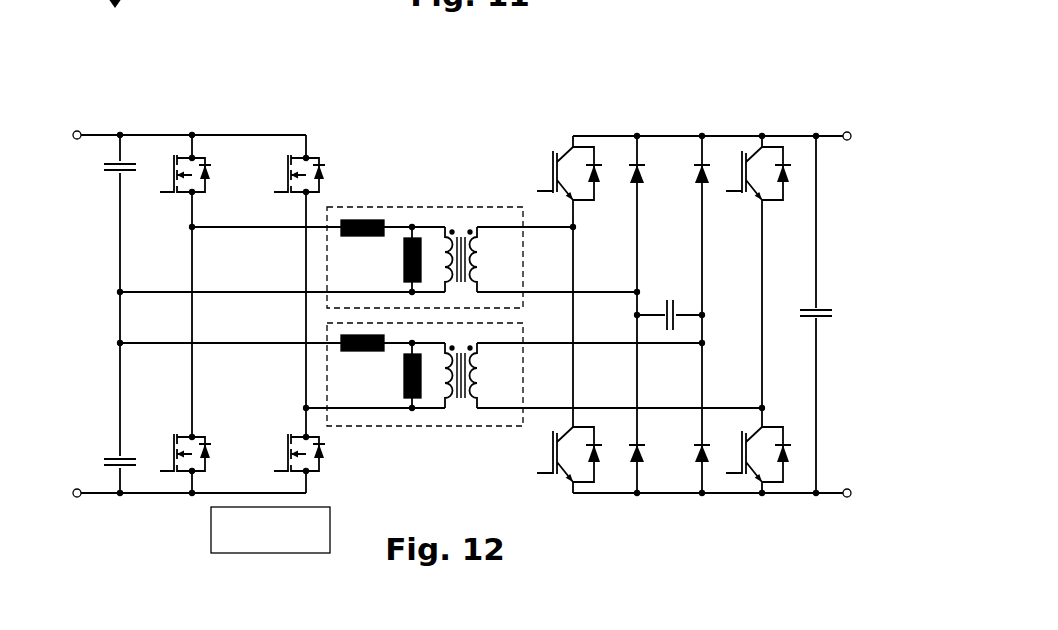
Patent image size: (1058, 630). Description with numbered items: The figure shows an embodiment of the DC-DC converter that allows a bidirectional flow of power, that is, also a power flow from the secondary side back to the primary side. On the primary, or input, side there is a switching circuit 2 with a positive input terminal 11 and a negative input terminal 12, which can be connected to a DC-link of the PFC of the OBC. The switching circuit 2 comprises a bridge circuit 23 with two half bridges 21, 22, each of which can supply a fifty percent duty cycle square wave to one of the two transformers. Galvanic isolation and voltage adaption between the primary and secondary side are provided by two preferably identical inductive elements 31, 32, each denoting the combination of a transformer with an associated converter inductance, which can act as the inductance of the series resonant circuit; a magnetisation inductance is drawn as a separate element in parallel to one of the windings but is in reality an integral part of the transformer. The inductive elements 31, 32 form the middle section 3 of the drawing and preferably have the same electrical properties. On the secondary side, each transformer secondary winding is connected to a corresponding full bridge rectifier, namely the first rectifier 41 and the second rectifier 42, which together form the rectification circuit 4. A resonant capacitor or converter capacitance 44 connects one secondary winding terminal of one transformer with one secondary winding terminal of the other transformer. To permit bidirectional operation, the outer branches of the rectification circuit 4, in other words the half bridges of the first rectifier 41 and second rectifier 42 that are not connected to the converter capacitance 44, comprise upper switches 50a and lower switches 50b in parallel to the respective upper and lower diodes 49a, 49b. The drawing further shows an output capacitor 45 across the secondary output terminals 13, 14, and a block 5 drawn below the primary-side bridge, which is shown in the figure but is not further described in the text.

The switching circuit 2 is at (368, 29).
The transformer section 3 is at (438, 130).
The rectification circuit 4 is at (768, 62).
The controller 5 is at (301, 540).
The positive input terminal 11 is at (97, 130).
The negative input terminal 12 is at (90, 498).
The secondary side terminal 13 is at (842, 130).
The secondary side terminal 14 is at (838, 500).
The half bridge 21 is at (233, 124).
The half bridge 22 is at (337, 124).
The bridge circuit 23 is at (153, 76).
The inductive element 31 is at (387, 206).
The inductive element 32 is at (375, 427).
The first rectifier 41 is at (642, 119).
The second rectifier 42 is at (697, 119).
The converter capacitance 44 is at (671, 298).
The smoothing capacitor 45 is at (827, 307).
The upper diode 49a is at (598, 196).
The lower diode 49b is at (606, 432).
The upper switch 50a is at (551, 163).
The lower switch 50b is at (551, 457).